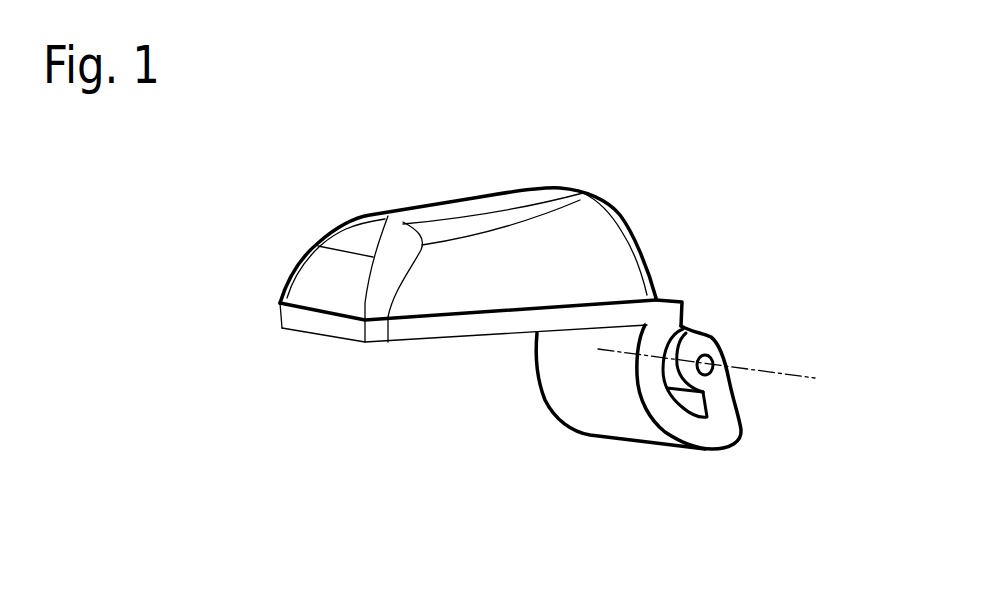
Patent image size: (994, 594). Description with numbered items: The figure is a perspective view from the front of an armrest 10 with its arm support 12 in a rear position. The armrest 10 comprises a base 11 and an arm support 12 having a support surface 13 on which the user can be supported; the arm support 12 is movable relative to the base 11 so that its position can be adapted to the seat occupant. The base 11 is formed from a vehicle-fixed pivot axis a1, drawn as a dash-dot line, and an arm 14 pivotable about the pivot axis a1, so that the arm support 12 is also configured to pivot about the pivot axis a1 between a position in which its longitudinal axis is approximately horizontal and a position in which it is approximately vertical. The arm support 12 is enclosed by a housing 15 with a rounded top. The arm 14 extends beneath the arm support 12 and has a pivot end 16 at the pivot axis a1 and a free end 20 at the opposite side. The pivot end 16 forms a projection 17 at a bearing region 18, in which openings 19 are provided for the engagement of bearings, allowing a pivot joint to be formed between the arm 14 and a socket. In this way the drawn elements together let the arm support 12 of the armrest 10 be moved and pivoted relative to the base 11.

The armrest 10 is at (642, 157).
The base 11 is at (612, 452).
The arm support 12 is at (507, 182).
The support surface 13 is at (437, 212).
The arm 14 is at (502, 332).
The housing 15 is at (357, 234).
The pivot end 16 is at (693, 290).
The projection 17 is at (580, 392).
The bearing region 18 is at (717, 347).
The openings 19 is at (709, 368).
The free end 20 is at (324, 331).
The pivot axis a1 is at (762, 368).